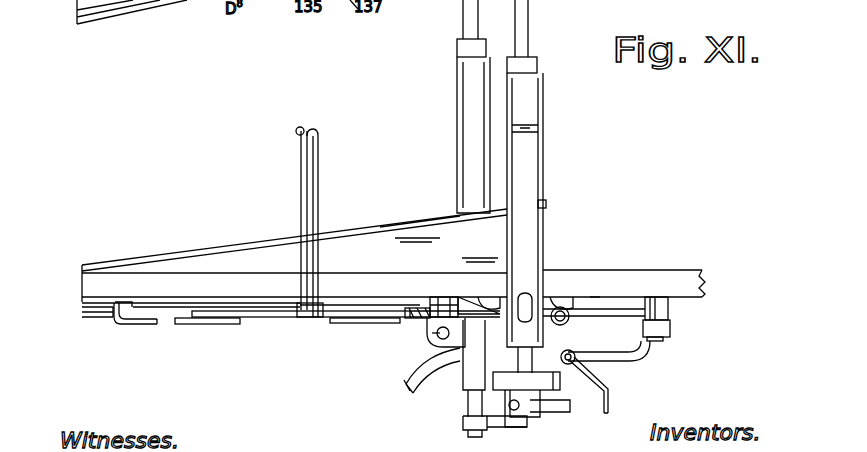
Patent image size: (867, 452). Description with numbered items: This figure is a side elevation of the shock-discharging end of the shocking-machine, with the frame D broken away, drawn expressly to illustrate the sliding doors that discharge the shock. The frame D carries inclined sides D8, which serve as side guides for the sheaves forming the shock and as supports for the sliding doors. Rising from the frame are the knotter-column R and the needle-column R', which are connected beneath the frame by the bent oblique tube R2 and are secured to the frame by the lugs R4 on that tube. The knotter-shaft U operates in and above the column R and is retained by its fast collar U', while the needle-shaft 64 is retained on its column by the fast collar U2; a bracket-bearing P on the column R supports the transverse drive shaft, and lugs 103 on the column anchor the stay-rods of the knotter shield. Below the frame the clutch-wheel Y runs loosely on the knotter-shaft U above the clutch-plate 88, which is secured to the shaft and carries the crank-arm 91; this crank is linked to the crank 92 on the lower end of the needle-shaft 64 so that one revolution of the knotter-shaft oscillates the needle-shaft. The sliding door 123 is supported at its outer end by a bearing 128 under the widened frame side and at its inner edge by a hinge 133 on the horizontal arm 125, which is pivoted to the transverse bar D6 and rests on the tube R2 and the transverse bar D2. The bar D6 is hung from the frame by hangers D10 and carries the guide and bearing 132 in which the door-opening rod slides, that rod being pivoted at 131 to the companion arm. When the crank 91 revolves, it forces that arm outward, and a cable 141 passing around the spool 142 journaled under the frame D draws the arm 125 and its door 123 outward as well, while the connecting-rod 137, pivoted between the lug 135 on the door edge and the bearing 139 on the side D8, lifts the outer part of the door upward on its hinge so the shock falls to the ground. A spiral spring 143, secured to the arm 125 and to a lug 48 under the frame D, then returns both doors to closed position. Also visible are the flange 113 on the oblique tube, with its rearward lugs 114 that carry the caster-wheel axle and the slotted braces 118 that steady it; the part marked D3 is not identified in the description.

The frame D is at (87, 285).
The lug 48 is at (590, 297).
The sides D8 is at (417, 222).
The bearing 139 is at (301, 179).
The connecting-rod 137 is at (319, 179).
The lug 135 is at (307, 305).
The needle-shaft 64 is at (470, 27).
The fast collar U2 is at (462, 52).
The needle-column R' is at (459, 135).
The knotter-shaft U is at (537, 186).
The fast collar U' is at (535, 62).
The knotter-column R is at (533, 210).
The lugs 103 is at (539, 128).
The bracket-bearing P is at (524, 294).
The sliding door 123 is at (102, 318).
The bearings 128 is at (153, 325).
The hinges 133 is at (215, 324).
The horizontal arm 125 is at (272, 317).
The cable 141 is at (407, 317).
The spool 142 is at (428, 320).
The clamp D3 is at (437, 299).
The oblique tube R2 is at (468, 297).
The lugs R4 is at (494, 300).
The flange 113 is at (467, 330).
The transverse bar D2 is at (432, 335).
The clutch-wheel Y is at (503, 376).
The braces 118 is at (418, 366).
The lugs 114 is at (418, 392).
The clutch-plate 88 is at (555, 384).
The crank-arm 91 is at (536, 418).
The crank 92 is at (514, 420).
The spiral spring 143 is at (583, 322).
The hangers D10 is at (668, 306).
The transverse bar D6 is at (670, 330).
The guide and bearing 132 is at (645, 362).
The pivotal connection 131 is at (598, 382).